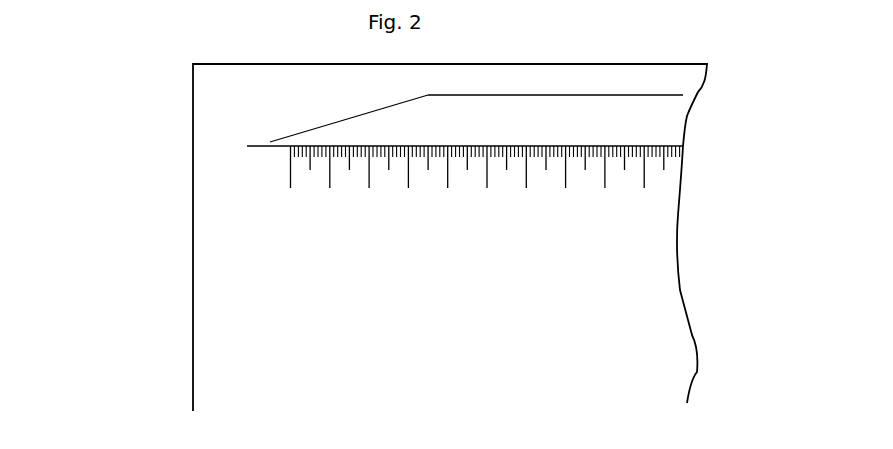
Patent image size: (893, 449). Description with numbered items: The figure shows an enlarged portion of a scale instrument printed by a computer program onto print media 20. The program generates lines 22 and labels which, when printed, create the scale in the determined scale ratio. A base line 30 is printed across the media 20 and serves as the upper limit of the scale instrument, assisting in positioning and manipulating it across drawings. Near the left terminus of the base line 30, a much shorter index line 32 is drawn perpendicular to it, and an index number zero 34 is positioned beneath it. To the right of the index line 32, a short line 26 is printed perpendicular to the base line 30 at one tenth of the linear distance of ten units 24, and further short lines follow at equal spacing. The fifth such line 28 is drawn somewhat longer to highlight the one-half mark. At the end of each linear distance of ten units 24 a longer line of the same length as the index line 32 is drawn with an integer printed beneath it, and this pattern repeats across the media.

The print media 20 is at (190, 283).
The lines generated by printer 22 is at (243, 134).
The linear distance of ten units 24 is at (330, 181).
The line indicating one tenth of the linear distance of ten units 26 is at (372, 160).
The line marking the five-tenths position 28 is at (467, 177).
The base line 30 is at (683, 95).
The index line 32 is at (292, 179).
The index number "0" 34 is at (288, 218).